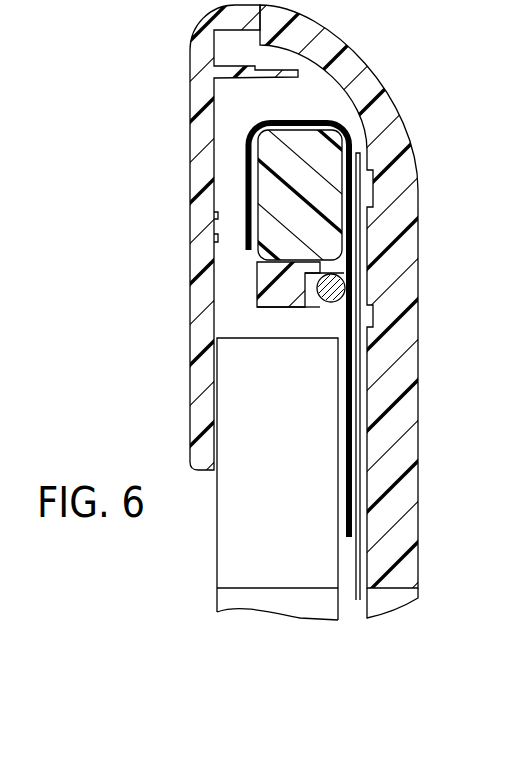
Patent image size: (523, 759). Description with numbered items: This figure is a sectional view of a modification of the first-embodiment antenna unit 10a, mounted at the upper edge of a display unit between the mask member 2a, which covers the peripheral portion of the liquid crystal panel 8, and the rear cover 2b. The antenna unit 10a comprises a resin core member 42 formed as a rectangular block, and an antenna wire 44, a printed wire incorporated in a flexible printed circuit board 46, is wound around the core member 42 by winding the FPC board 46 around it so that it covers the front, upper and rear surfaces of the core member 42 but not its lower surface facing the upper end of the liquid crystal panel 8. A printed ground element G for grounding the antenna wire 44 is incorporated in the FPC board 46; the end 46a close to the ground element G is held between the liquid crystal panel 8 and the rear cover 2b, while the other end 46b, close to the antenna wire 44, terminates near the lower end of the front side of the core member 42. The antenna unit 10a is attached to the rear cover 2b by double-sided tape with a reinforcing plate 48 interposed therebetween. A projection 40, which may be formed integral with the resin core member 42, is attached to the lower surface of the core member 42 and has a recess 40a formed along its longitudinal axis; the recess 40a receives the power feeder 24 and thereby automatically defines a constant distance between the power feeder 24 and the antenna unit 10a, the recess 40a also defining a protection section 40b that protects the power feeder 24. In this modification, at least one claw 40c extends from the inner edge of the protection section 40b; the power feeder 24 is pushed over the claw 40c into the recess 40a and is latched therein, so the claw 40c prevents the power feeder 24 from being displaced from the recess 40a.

The mask member 2a is at (203, 158).
The rear cover 2b is at (400, 140).
The liquid crystal panel 8 is at (220, 556).
The antenna unit 10a is at (323, 97).
The power feeder 24 is at (326, 308).
The projection 40 is at (257, 307).
The recess 40a is at (305, 273).
The protection section 40b is at (280, 308).
The claw 40c is at (317, 307).
The core member 42 is at (262, 200).
The antenna wire 44 is at (228, 278).
The flexible printed circuit board 46 is at (245, 124).
The end of the FPC board 46a is at (348, 545).
The end of the FPC board 46b is at (247, 255).
The reinforcing plate 48 is at (358, 243).
The ground element G is at (345, 497).